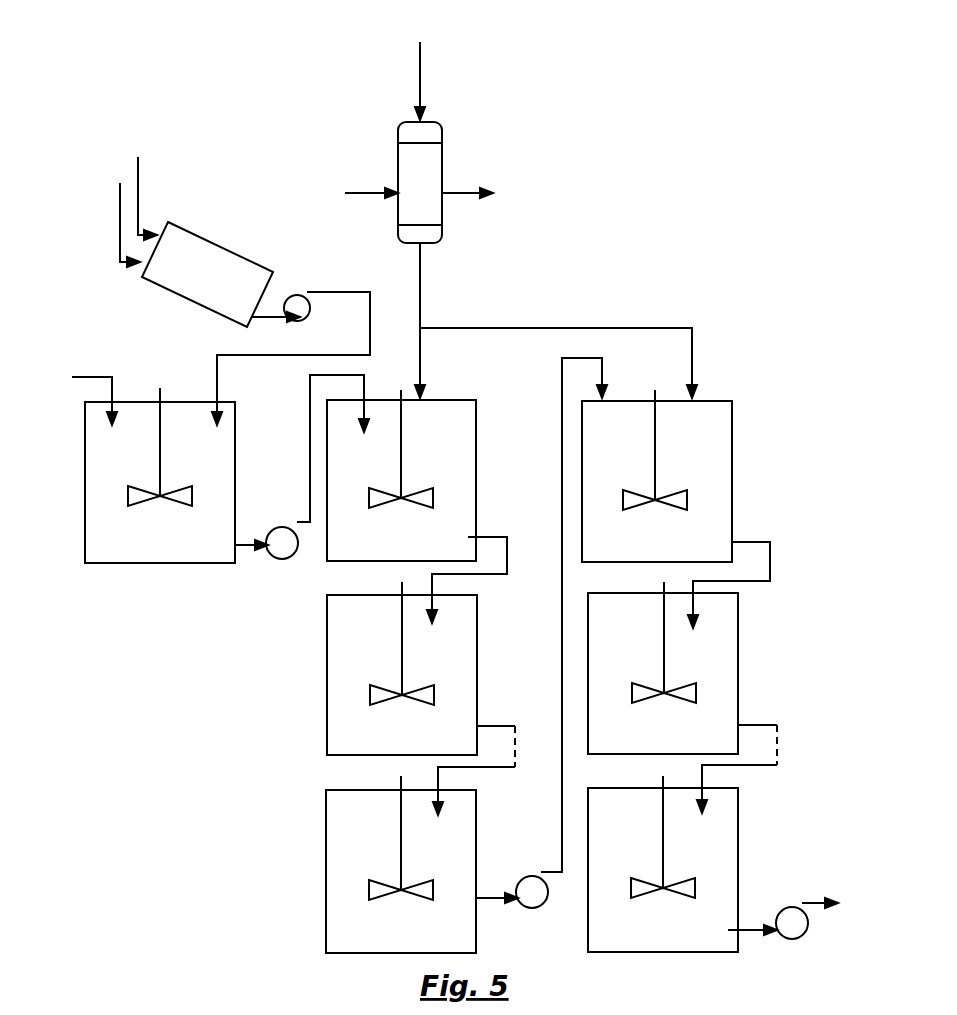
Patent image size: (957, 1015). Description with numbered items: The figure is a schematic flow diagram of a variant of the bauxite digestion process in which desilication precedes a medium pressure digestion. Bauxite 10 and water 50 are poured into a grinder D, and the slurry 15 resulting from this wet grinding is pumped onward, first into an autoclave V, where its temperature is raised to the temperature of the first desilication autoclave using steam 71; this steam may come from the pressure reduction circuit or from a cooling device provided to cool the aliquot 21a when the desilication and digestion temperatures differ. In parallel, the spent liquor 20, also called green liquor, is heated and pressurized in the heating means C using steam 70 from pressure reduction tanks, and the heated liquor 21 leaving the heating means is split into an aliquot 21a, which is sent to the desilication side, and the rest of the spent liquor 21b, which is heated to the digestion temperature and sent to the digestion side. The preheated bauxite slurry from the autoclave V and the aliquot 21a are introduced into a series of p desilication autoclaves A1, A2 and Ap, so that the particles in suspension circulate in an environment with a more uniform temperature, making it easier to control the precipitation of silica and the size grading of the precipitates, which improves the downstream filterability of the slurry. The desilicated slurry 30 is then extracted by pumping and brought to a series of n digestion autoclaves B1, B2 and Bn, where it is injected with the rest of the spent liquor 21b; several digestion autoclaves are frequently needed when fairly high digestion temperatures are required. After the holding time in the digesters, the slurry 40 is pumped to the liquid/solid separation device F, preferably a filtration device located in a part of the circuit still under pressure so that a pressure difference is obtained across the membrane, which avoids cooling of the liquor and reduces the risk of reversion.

The spent liquor 20 is at (437, 64).
The steam 70 is at (363, 175).
The heating means C is at (430, 165).
The heated spent liquor 21 is at (444, 285).
The aliquot of spent liquor 21a is at (450, 363).
The rest of spent liquor 21b is at (588, 348).
The water 50 is at (111, 207).
The bauxite 10 is at (159, 189).
The grinder D is at (212, 278).
The slurry 15 is at (291, 358).
The steam 71 is at (76, 397).
The autoclave V is at (110, 547).
The first desilication autoclave A1 is at (340, 553).
The second desilication autoclave A2 is at (342, 680).
The last desilication autoclave Ap is at (342, 877).
The slurry 30 is at (560, 615).
The first digestion autoclave B1 is at (712, 475).
The second digestion autoclave B2 is at (725, 669).
The last digestion autoclave Bn is at (712, 853).
The slurry 40 is at (783, 905).
The liquid/solid separation device F is at (855, 903).